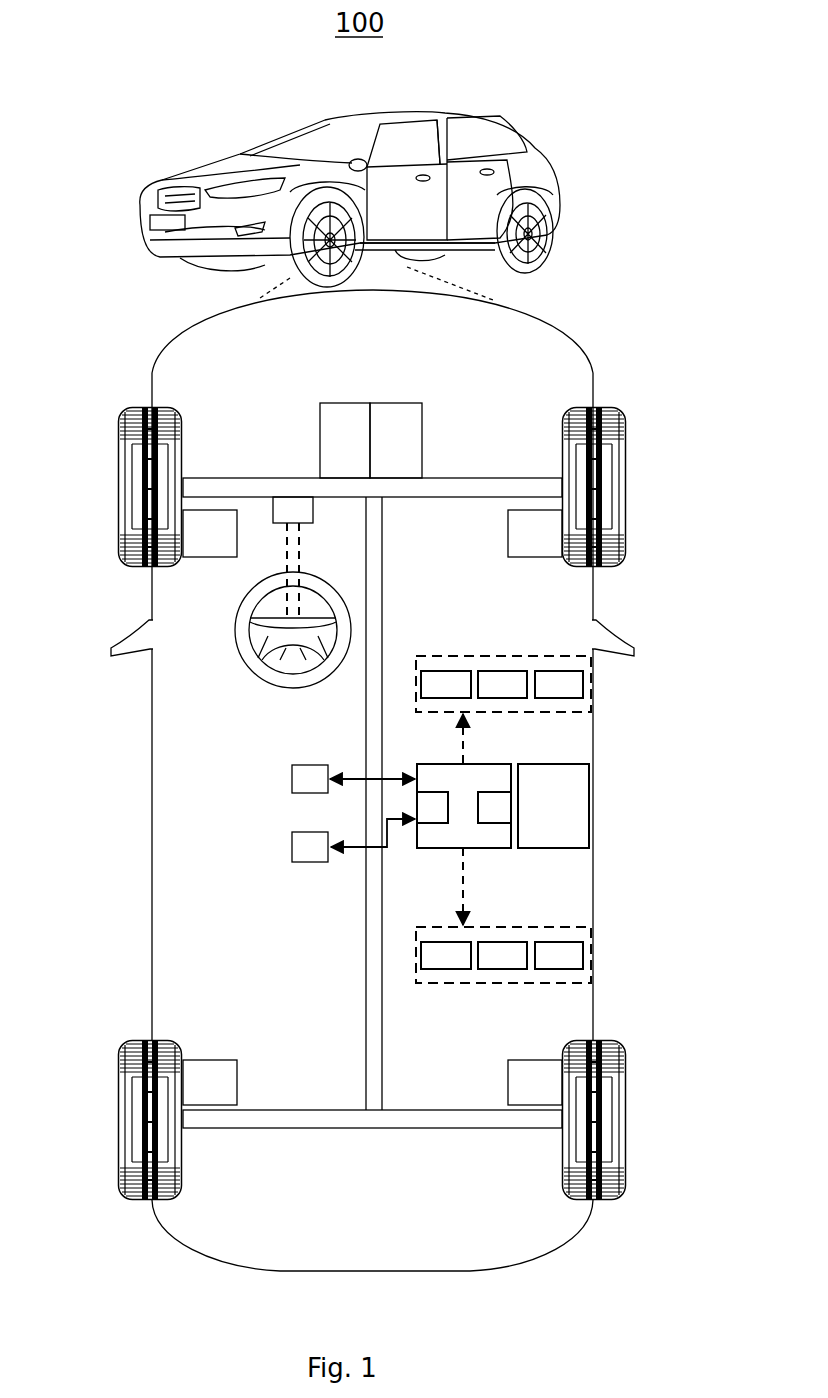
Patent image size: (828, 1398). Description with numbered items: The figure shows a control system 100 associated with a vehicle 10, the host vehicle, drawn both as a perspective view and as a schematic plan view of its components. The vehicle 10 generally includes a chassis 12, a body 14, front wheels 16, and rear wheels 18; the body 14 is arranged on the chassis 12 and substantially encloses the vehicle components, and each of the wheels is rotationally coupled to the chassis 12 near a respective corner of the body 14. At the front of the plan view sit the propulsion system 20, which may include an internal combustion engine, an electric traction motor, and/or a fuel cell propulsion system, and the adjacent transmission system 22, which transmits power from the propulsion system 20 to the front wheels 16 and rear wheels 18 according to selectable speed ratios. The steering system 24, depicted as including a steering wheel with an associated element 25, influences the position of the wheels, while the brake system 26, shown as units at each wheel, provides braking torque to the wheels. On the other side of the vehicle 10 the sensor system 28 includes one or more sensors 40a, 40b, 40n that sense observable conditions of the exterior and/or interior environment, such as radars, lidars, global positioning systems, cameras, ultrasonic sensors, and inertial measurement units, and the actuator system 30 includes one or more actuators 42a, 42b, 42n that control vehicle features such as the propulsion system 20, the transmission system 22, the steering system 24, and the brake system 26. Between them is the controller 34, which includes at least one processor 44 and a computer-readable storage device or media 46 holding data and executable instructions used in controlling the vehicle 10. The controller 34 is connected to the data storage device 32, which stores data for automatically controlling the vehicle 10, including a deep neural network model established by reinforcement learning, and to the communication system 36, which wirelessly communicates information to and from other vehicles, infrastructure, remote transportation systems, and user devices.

The control system 100 is at (298, 848).
The vehicle 10 is at (140, 218).
The chassis 12 is at (375, 1128).
The body 14 is at (153, 708).
The front wheels 16 is at (118, 470).
The rear wheels 18 is at (118, 1104).
The propulsion system 20 is at (320, 440).
The transmission system 22 is at (413, 440).
The steering system 24 is at (252, 683).
The steering column 25 is at (293, 690).
The brake system 26 is at (218, 540).
The sensor system 28 is at (453, 656).
The actuator system 30 is at (543, 925).
The data storage device 32 is at (295, 785).
The controller 34 is at (428, 778).
The communication system 36 is at (548, 775).
The sensor 40a is at (432, 678).
The sensor 40b is at (497, 683).
The sensor 40n is at (580, 686).
The actuator 42a is at (438, 950).
The actuator 42b is at (513, 950).
The actuator 42n is at (580, 958).
The processor 44 is at (440, 820).
The computer-readable storage device or media 46 is at (488, 802).